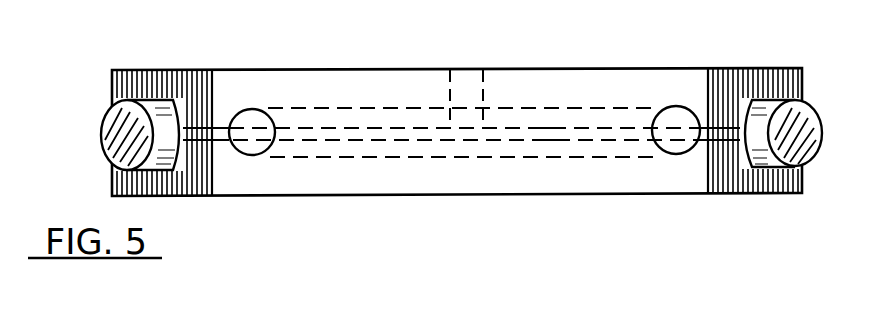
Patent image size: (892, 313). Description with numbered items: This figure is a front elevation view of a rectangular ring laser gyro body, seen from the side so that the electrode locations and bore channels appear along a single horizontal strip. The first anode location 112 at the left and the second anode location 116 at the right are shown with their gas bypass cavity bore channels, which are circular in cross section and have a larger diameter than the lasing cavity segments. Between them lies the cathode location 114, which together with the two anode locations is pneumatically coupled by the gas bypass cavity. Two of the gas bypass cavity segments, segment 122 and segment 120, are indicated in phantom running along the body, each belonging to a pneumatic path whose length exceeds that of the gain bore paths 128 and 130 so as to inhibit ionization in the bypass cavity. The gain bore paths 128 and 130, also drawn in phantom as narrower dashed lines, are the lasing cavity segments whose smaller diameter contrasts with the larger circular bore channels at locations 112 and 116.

The anode 1 location 112 is at (261, 146).
The cathode location 114 is at (467, 147).
The anode 2 location 116 is at (672, 148).
The gas bypass cavity segment 120 is at (566, 106).
The gas bypass cavity segment 122 is at (365, 148).
The gain bore path 128 is at (366, 152).
The gain bore path 130 is at (570, 130).